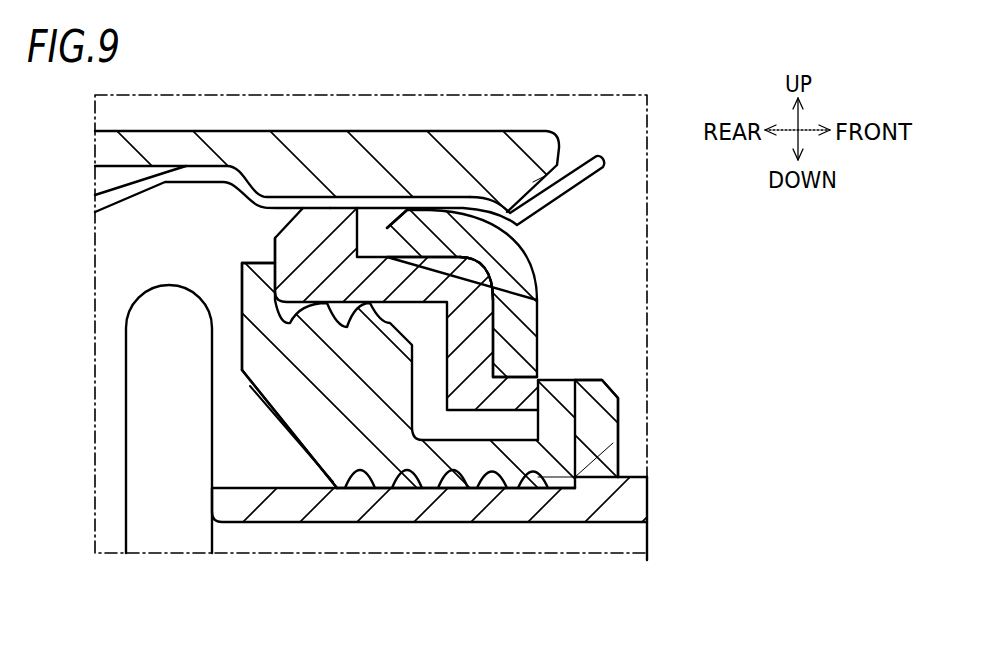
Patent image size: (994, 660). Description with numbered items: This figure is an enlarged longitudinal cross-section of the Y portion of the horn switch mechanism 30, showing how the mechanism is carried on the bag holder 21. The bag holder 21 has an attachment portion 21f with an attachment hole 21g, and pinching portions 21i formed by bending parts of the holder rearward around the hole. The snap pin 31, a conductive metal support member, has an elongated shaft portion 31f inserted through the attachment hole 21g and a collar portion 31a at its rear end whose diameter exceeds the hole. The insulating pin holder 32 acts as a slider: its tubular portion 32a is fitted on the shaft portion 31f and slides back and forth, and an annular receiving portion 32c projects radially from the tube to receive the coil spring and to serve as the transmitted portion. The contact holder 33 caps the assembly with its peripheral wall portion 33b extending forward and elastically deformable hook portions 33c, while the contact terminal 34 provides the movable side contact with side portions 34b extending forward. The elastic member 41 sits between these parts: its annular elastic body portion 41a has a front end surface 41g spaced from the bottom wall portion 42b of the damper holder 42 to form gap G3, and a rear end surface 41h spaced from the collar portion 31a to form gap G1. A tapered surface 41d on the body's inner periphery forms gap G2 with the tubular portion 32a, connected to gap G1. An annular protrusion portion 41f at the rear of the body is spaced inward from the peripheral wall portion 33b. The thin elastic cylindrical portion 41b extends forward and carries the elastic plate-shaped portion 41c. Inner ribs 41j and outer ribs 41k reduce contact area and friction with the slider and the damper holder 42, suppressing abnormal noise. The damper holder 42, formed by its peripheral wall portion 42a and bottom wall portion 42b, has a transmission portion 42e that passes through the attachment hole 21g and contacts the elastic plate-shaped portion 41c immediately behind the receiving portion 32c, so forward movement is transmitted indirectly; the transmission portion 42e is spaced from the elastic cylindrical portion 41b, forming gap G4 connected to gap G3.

The bag holder 21 is at (507, 325).
The attachment portion 21f is at (520, 298).
The attachment hole 21g is at (538, 368).
The pinching portion 21i is at (440, 218).
The horn switch mechanism 30 is at (86, 261).
The snap pin 31 is at (374, 422).
The collar portion 31a is at (128, 440).
The shaft portion 31f is at (652, 541).
The pin holder 32 is at (599, 352).
The tubular portion 32a is at (337, 518).
The receiving portion 32c is at (597, 450).
The contact holder 33 is at (316, 164).
The peripheral wall portion 33b is at (95, 152).
The hook portion 33c is at (533, 182).
The contact terminal 34 is at (551, 187).
The side portion 34b is at (647, 163).
The elastic member 41 is at (387, 359).
The elastic body portion 41a is at (247, 332).
The elastic cylindrical portion 41b is at (455, 450).
The elastic plate-shaped portion 41c is at (563, 430).
The tapered surface 41d is at (285, 436).
The annular protrusion portion 41f is at (262, 262).
The front end surface 41g is at (412, 417).
The rear end surface 41h is at (242, 372).
The inner rib 41j is at (558, 477).
The outer rib 41k is at (485, 277).
The damper holder 42 is at (468, 344).
The peripheral wall portion 42a is at (370, 262).
The bottom wall portion 42b is at (487, 323).
The transmission portion 42e is at (560, 477).
The gap G1 is at (212, 342).
The gap G2 is at (270, 462).
The gap G3 is at (415, 380).
The gap G4 is at (470, 430).
The Y portion Y is at (647, 232).